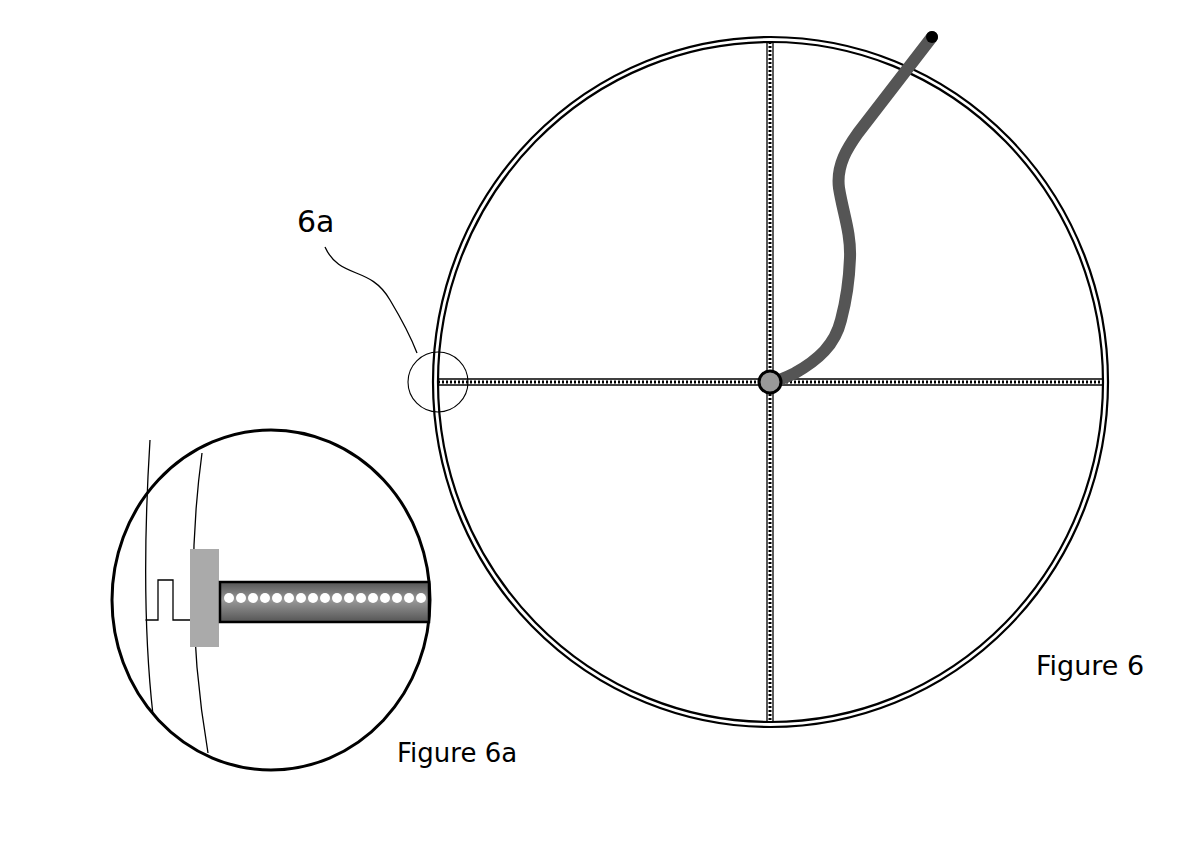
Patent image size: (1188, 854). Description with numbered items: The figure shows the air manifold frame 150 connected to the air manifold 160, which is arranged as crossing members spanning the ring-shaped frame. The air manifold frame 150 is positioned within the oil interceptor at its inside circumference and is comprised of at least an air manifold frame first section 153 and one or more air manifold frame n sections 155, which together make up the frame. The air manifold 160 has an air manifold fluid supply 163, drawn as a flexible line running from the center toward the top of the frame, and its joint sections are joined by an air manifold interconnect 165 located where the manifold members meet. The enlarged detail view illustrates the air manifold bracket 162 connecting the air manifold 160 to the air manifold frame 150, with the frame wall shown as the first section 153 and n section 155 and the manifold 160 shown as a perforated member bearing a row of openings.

In FIG. 6, the air manifold frame 150 is at (1015, 140).
In FIG. 6A, the air manifold frame first section 153 is at (172, 493).
In FIG. 6A, the air manifold frame n section 155 is at (175, 670).
In FIG. 6, the air manifold 160 is at (765, 253).
In FIG. 6A, the air manifold 160 is at (252, 595).
In FIG. 6A, the air manifold bracket 162 is at (205, 560).
In FIG. 6, the air manifold fluid supply 163 is at (855, 138).
In FIG. 6, the air manifold interconnect 165 is at (780, 393).